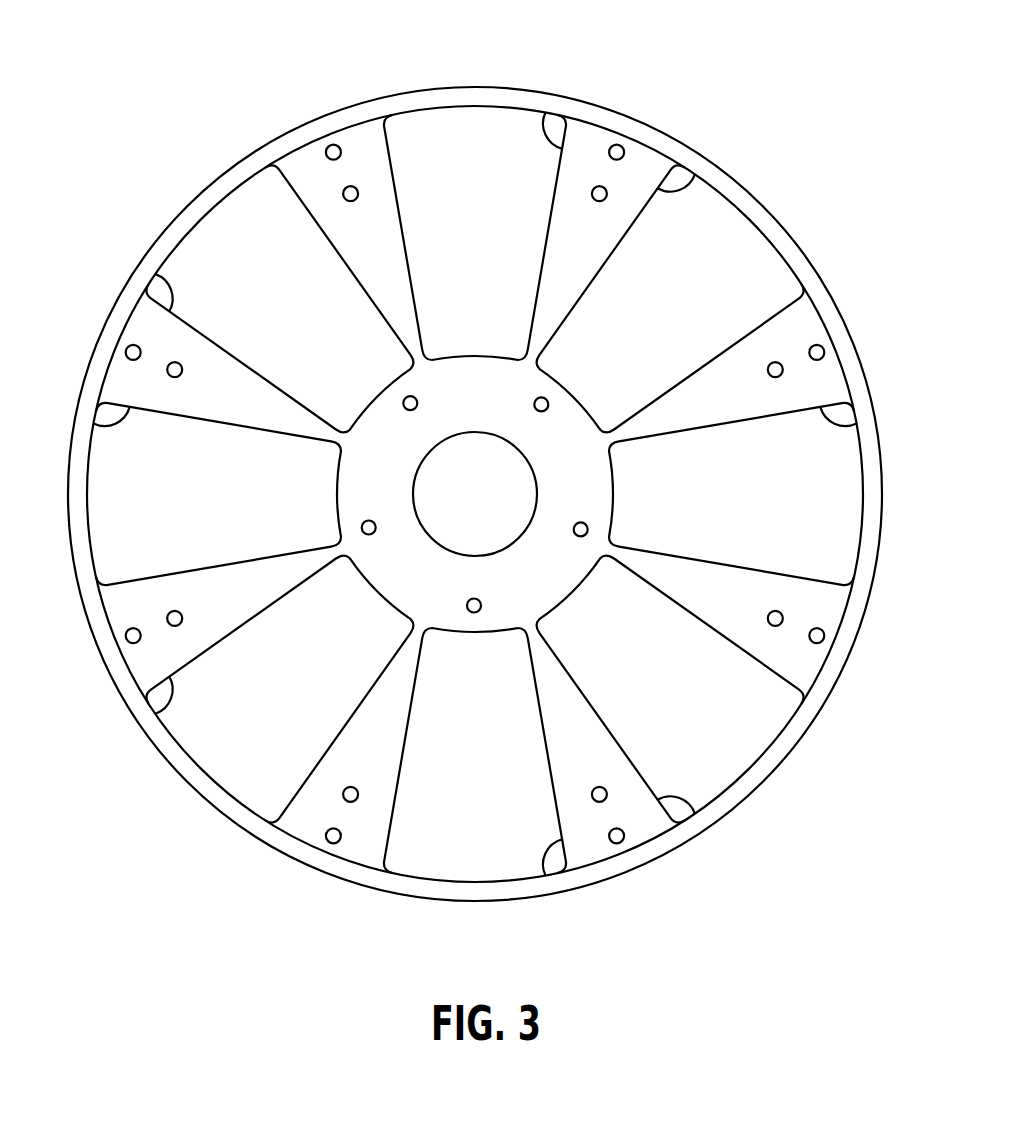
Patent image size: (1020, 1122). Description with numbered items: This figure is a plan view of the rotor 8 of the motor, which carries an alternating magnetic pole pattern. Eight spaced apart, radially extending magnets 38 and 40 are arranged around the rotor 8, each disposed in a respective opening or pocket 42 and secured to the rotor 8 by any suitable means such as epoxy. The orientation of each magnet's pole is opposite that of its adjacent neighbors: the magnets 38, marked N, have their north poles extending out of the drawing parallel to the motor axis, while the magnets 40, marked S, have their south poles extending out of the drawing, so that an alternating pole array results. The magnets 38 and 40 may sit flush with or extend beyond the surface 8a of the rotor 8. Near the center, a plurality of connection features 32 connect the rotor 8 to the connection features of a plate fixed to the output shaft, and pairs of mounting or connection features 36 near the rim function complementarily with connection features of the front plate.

The rotor 8 is at (776, 216).
The surface of rotor 8a is at (840, 375).
The connection features 32 is at (417, 399).
The mounting or connection features 36 is at (344, 189).
The magnets 38 is at (232, 235).
The magnets 40 is at (475, 128).
The openings or pockets 42 is at (550, 114).